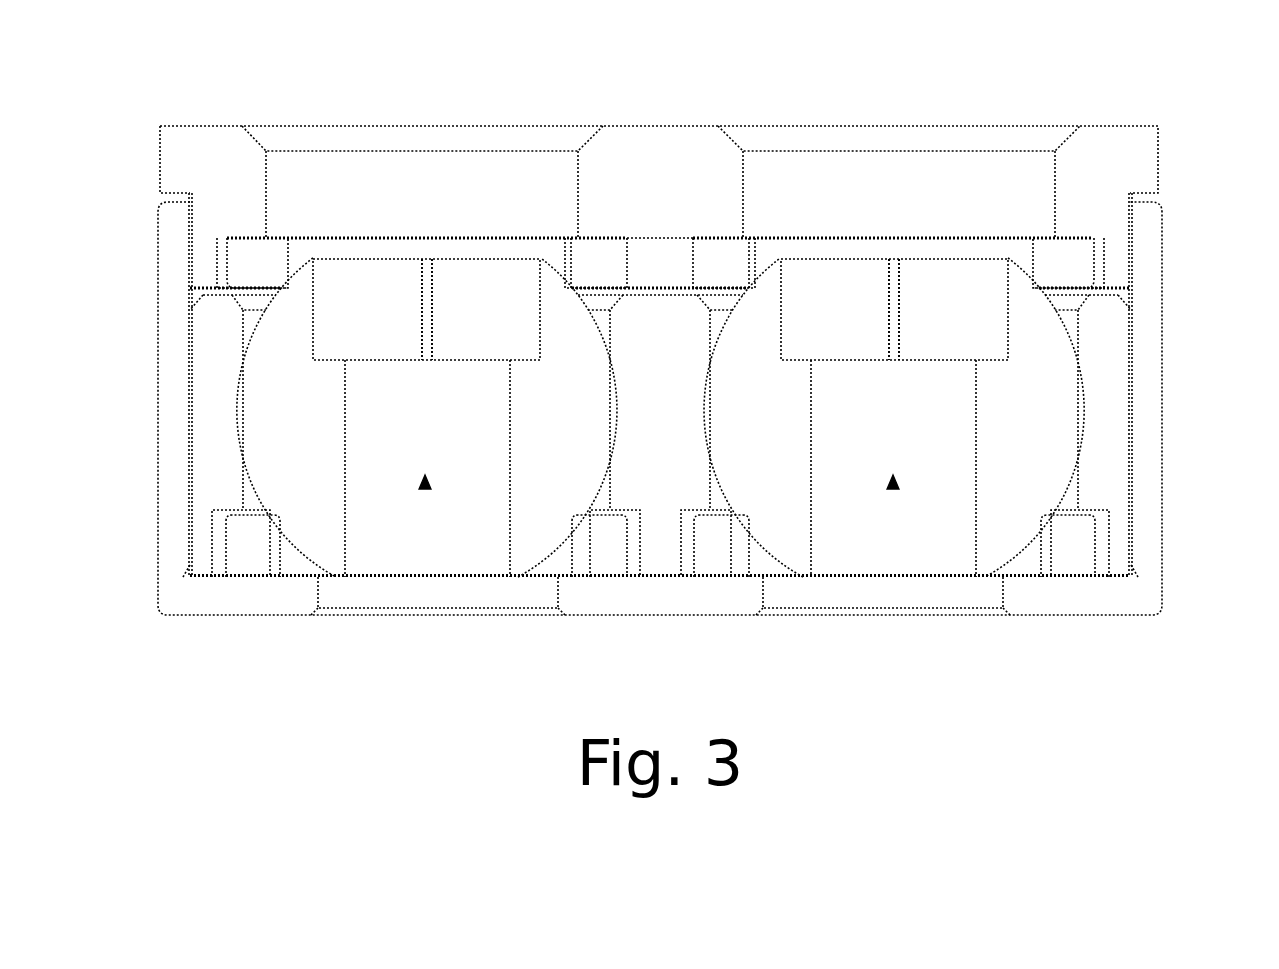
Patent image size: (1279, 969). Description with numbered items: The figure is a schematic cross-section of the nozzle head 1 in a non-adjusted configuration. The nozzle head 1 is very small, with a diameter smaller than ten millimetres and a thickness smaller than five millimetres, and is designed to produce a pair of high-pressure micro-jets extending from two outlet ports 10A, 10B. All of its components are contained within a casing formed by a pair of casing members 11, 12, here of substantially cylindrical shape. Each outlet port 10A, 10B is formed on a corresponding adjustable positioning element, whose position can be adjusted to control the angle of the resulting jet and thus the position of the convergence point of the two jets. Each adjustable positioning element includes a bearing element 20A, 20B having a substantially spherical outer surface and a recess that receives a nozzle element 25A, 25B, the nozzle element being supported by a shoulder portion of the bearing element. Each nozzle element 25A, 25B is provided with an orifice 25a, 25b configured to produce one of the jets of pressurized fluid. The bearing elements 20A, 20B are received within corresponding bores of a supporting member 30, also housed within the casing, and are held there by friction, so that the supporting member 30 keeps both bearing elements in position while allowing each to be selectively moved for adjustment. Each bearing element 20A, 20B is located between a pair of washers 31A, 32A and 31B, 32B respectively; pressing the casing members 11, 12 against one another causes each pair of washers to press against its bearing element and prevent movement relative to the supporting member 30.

The nozzle head 1 is at (1188, 128).
The casing member 11 is at (1150, 513).
The casing member 12 is at (183, 163).
The outlet port 10A is at (425, 488).
The outlet port 10B is at (893, 488).
The bearing element 20A is at (266, 429).
The bearing element 20B is at (736, 429).
The nozzle element 25A is at (341, 319).
The nozzle element 25B is at (931, 319).
The orifice 25a is at (427, 256).
The orifice 25b is at (894, 256).
The supporting member 30 is at (205, 369).
The washer 31A is at (253, 550).
The washer 31B is at (1068, 552).
The washer 32A is at (272, 247).
The washer 32B is at (1066, 247).